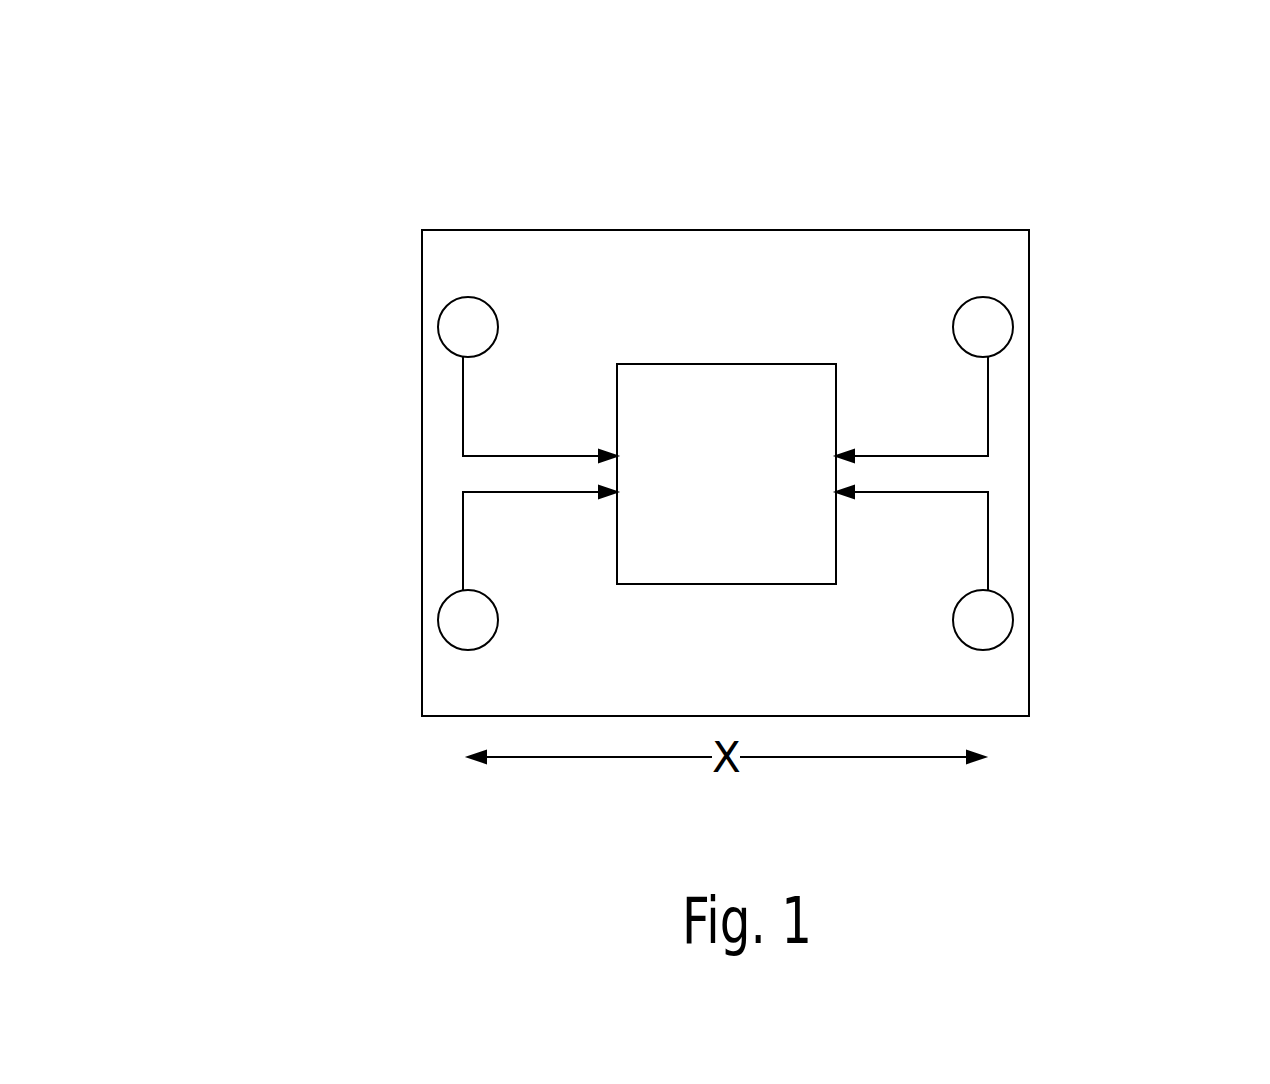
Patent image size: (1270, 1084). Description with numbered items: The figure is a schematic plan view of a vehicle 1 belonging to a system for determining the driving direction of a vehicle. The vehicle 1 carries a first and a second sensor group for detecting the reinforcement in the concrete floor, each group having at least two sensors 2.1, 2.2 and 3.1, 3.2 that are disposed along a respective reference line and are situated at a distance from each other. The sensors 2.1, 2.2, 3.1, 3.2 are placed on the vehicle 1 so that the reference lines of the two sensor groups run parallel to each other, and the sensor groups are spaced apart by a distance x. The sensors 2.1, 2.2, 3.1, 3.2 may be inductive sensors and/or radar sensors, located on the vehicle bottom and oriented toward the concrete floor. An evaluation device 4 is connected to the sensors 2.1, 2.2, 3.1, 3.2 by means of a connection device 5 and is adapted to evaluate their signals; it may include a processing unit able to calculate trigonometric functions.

The vehicle 1 is at (1029, 286).
The evaluation device 4 is at (675, 364).
The connection device 5 is at (465, 529).
The sensor 2.1 is at (1013, 624).
The sensor 2.2 is at (1013, 333).
The sensor 3.1 is at (440, 631).
The sensor 3.2 is at (439, 331).